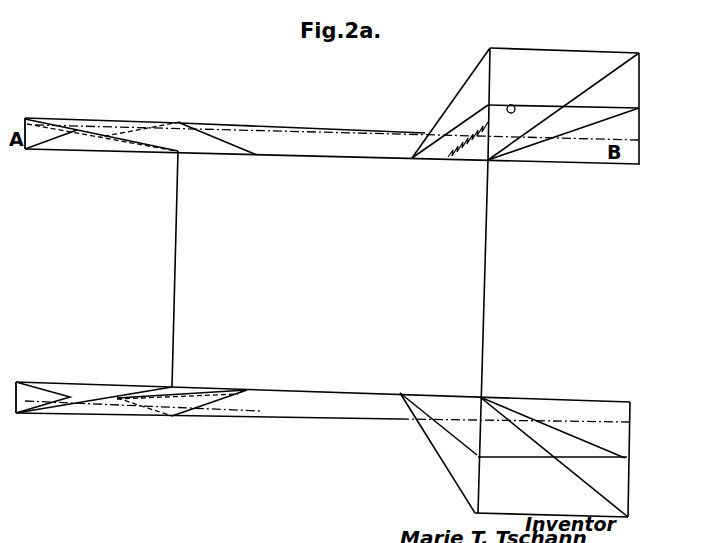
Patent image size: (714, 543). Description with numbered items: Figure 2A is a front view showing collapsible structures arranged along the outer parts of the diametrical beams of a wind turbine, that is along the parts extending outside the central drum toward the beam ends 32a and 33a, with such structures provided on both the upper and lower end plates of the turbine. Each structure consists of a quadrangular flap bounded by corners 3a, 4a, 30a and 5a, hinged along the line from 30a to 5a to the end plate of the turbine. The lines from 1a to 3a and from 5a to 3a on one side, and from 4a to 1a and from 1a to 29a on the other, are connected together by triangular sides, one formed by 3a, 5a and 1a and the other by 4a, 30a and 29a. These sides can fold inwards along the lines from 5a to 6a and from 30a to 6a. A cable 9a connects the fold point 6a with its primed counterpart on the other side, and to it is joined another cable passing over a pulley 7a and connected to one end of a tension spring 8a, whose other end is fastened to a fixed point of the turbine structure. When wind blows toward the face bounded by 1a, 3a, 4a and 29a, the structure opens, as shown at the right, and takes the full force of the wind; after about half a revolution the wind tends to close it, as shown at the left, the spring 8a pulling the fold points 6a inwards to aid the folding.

The flap corner point 1a is at (331, 280).
The quadrangular flap corner 3a is at (406, 94).
The quadrangular flap corner 4a is at (340, 95).
The flap hinge point 5a is at (340, 176).
The fold point 6a is at (131, 133).
The pulley 7a is at (512, 105).
The tension spring 8a is at (469, 143).
The cable 9a is at (546, 104).
The structure corner point 29a is at (654, 117).
The flap hinge point 30a is at (488, 160).
The diametrical beam end 32a is at (34, 147).
The diametrical beam end 33a is at (179, 152).